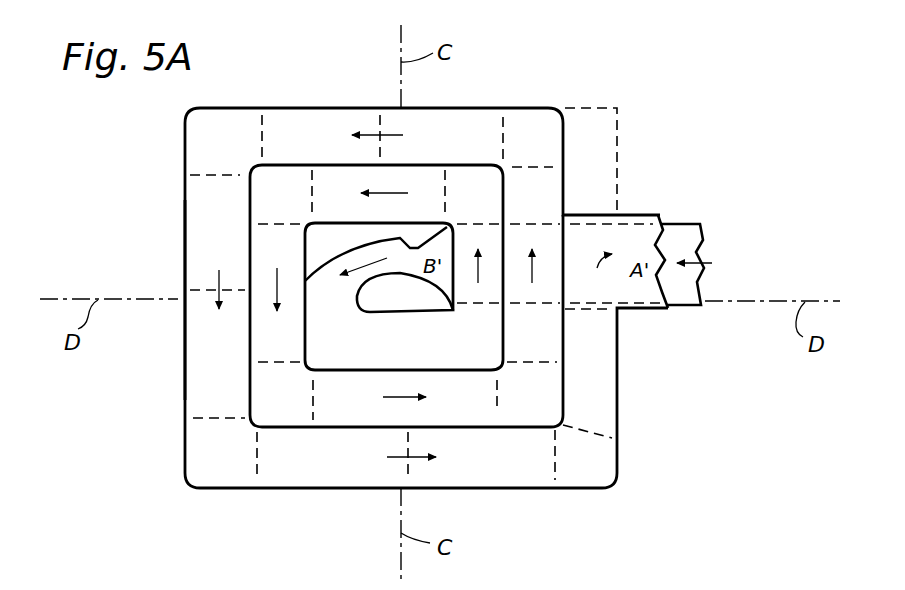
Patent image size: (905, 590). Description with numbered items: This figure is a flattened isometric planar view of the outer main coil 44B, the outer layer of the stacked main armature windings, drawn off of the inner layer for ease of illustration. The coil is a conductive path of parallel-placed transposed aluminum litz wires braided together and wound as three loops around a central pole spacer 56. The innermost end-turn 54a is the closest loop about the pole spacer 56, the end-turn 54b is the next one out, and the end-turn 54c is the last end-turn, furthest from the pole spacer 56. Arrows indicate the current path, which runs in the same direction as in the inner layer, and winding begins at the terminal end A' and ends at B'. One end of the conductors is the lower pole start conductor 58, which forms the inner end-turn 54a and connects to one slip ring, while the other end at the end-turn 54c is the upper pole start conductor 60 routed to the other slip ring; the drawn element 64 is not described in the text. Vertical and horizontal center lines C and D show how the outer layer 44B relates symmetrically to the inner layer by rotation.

The outer main coil 44B is at (614, 494).
The innermost end-turn 54a is at (437, 243).
The end-turn 54b is at (475, 183).
The end-turn 54c is at (520, 127).
The pole spacer 56 is at (382, 295).
The lower pole start conductor 58 is at (683, 285).
The upper pole start conductor 60 is at (640, 239).
The side wall 64 is at (181, 288).